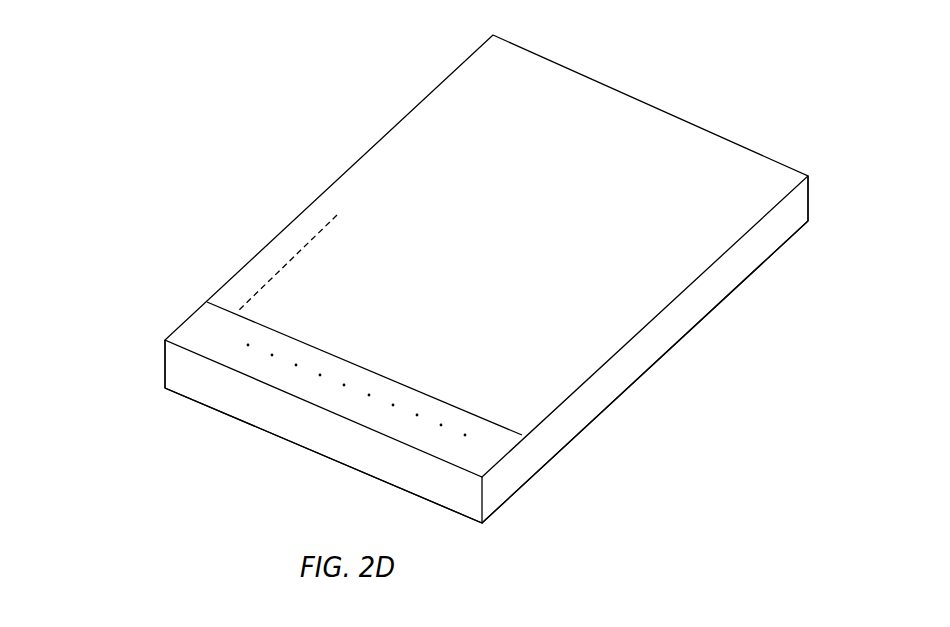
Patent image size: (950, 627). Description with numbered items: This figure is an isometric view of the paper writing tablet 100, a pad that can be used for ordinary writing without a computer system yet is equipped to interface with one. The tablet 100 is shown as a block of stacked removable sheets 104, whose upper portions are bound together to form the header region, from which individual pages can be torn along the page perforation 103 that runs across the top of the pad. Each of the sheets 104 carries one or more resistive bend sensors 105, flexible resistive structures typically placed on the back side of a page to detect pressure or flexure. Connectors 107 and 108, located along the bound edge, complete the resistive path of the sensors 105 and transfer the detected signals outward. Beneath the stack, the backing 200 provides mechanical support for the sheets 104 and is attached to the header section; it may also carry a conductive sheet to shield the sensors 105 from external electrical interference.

The paper writing tablet 100 is at (541, 247).
The page perforation 103 is at (208, 303).
The removable sheets 104 is at (808, 176).
The resistive bend sensors 105 is at (300, 250).
The connector 107 is at (204, 326).
The connector 108 is at (490, 443).
The backing 200 is at (777, 250).